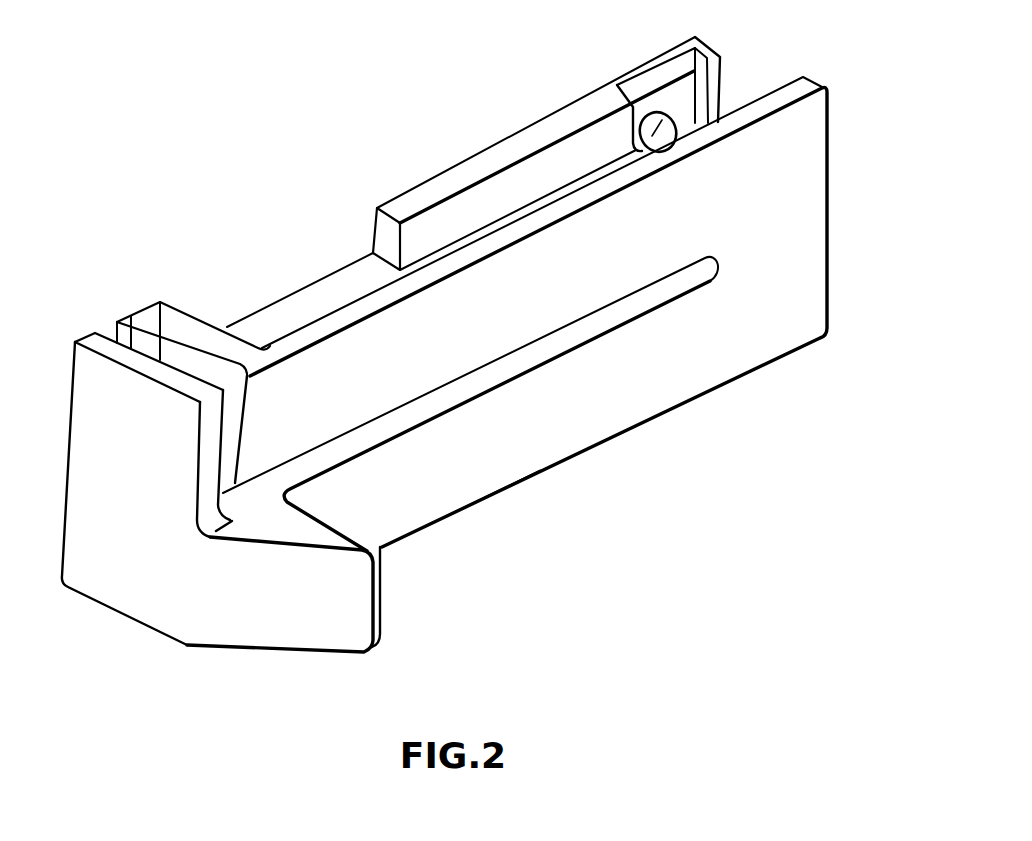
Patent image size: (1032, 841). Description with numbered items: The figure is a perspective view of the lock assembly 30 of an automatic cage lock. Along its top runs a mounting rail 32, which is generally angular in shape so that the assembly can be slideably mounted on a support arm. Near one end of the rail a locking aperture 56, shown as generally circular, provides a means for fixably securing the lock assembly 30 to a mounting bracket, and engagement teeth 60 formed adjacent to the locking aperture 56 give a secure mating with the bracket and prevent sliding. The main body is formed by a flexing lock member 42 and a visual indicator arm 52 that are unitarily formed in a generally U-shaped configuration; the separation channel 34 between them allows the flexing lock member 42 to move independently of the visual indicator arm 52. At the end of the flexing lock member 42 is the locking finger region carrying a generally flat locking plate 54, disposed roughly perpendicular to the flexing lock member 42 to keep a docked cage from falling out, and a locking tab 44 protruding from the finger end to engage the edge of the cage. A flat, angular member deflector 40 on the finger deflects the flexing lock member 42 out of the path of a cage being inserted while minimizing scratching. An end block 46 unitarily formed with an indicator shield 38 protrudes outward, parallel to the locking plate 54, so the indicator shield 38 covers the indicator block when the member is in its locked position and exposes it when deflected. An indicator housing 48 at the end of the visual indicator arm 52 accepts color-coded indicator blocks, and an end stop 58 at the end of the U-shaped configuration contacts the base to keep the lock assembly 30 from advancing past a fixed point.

The lock assembly 30 is at (368, 74).
The mounting rail 32 is at (457, 177).
The separation channel 34 is at (627, 310).
The indicator shield 38 is at (122, 403).
The member deflector 40 is at (290, 610).
The flexing lock member 42 is at (552, 432).
The locking tab 44 is at (384, 593).
The end block 46 is at (128, 557).
The indicator housing 48 is at (200, 350).
The visual indicator arm 52 is at (525, 325).
The locking plate 54 is at (335, 510).
The locking aperture 56 is at (643, 127).
The end stop 58 is at (832, 211).
The engagement teeth 60 is at (707, 121).